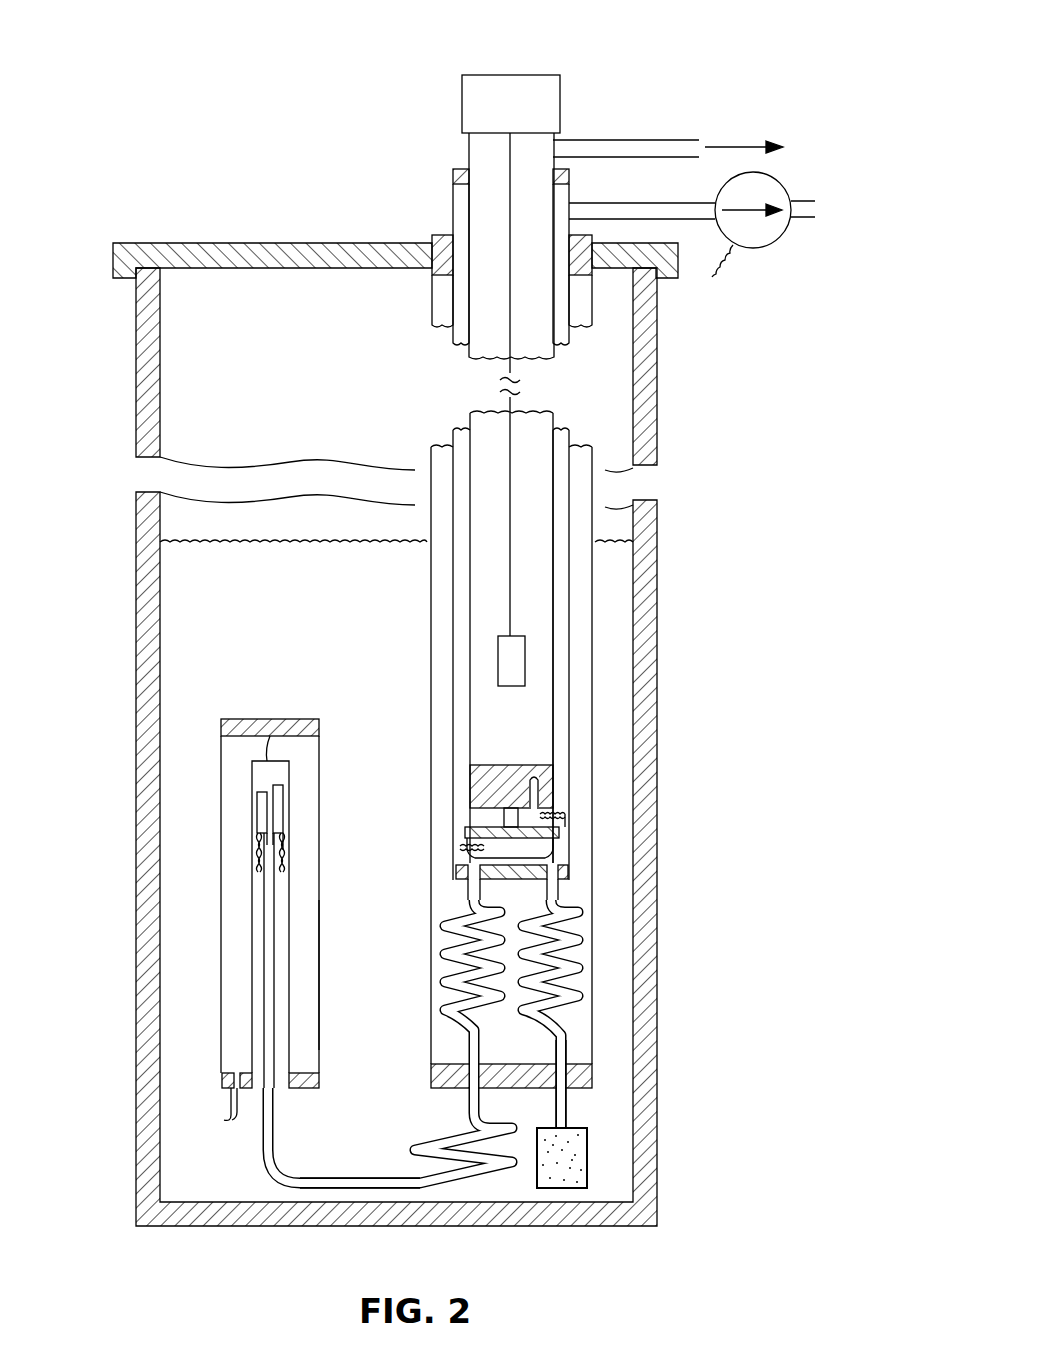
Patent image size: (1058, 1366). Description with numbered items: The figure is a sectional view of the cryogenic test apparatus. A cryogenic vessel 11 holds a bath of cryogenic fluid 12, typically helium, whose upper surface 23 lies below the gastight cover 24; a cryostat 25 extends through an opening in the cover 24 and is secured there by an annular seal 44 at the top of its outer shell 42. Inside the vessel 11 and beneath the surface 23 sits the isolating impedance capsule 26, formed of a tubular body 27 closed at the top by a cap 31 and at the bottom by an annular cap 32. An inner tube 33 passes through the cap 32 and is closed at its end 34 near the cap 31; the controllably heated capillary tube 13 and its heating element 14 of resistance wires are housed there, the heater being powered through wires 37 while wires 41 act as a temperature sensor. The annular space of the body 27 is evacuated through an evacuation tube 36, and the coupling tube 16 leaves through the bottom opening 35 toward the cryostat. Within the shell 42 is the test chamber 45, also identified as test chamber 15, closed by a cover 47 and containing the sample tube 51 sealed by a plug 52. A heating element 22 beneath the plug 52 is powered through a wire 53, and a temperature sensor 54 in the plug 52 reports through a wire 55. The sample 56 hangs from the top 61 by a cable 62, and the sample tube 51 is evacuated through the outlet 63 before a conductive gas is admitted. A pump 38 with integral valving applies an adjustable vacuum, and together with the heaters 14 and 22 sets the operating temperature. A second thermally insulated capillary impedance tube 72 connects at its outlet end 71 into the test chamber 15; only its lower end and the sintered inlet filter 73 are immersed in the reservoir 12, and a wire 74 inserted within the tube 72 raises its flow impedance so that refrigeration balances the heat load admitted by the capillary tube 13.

The cryogenic vessel 11 is at (660, 372).
The cryogenic fluid 12 is at (180, 603).
The capillary tube 13 is at (267, 818).
The heating element 14 is at (278, 807).
The test chamber 15 is at (563, 697).
The coupling tube 16 is at (378, 1177).
The heating element 22 is at (570, 853).
The upper surface 23 is at (266, 542).
The gastight cover 24 is at (182, 243).
The cryostat 25 is at (430, 185).
The isolating impedance capsule 26 is at (341, 722).
The tubular body 27 is at (319, 975).
The cap 31 is at (262, 719).
The annular cap 32 is at (303, 1088).
The inner tube 33 is at (290, 1040).
The closed end 34 is at (272, 760).
The bottom opening 35 is at (258, 1085).
The evacuation tube 36 is at (225, 1118).
The wires 37 is at (287, 852).
The pump 38 is at (782, 248).
The wires 41 is at (258, 857).
The outer shell 42 is at (590, 735).
The annular seal 44 is at (432, 240).
The test chamber 45 is at (572, 592).
The cover 47 is at (458, 882).
The sample tube 51 is at (470, 597).
The plug 52 is at (468, 790).
The wire 53 is at (465, 855).
The temperature sensor 54 is at (535, 790).
The wire 55 is at (565, 828).
The sample 56 is at (522, 655).
The top 61 is at (500, 75).
The cable 62 is at (513, 493).
The outlet 63 is at (650, 140).
The outlet end 71 is at (583, 872).
The second capillary flow impedance tube 72 is at (590, 1005).
The inlet filter 73 is at (588, 1160).
The wire 74 is at (566, 1108).